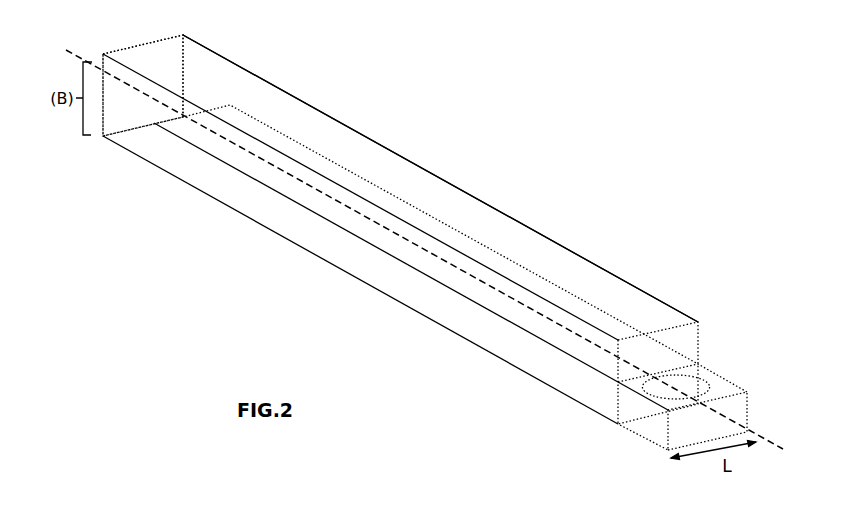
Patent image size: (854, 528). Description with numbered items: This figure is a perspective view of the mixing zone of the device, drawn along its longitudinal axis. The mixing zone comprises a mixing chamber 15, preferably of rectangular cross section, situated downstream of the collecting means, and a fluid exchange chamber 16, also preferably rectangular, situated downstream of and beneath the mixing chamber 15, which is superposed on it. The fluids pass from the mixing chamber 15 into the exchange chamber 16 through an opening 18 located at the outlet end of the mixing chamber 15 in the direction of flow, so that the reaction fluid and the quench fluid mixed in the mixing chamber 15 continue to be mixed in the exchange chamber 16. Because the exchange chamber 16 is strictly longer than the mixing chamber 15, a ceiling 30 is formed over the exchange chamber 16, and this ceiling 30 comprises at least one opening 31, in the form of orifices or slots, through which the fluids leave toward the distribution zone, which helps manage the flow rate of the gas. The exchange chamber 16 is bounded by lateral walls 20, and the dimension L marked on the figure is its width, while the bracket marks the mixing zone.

The mixing chamber 15 is at (488, 230).
The fluid exchange chamber 16 is at (495, 307).
The opening 18 is at (150, 103).
The lateral walls 20 is at (265, 210).
The ceiling 30 is at (717, 385).
The opening 31 is at (672, 385).